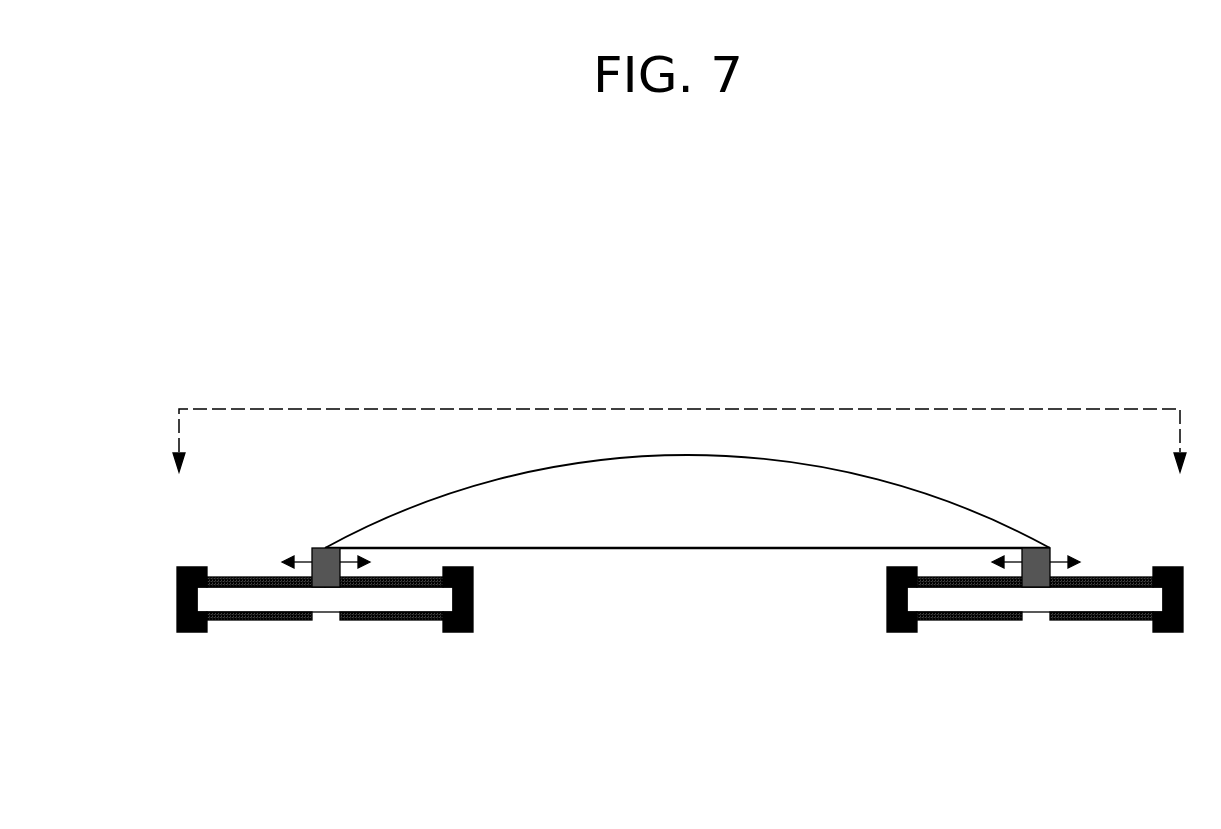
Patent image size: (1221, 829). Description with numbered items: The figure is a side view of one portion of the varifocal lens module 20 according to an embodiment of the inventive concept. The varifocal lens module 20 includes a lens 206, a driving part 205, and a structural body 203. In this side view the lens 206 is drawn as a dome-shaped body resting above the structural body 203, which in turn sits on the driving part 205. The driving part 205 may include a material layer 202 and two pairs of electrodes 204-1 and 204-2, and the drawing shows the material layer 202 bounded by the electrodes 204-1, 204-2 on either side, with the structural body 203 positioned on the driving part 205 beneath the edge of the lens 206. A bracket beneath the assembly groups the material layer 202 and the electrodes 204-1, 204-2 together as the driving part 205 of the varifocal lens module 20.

The varifocal lens module 20 is at (760, 331).
The material layer 202 is at (324, 611).
The structural body 203 is at (323, 546).
The electrode 204-1 is at (230, 581).
The electrode 204-2 is at (420, 581).
The driving part 205 is at (163, 700).
The lens 206 is at (855, 471).